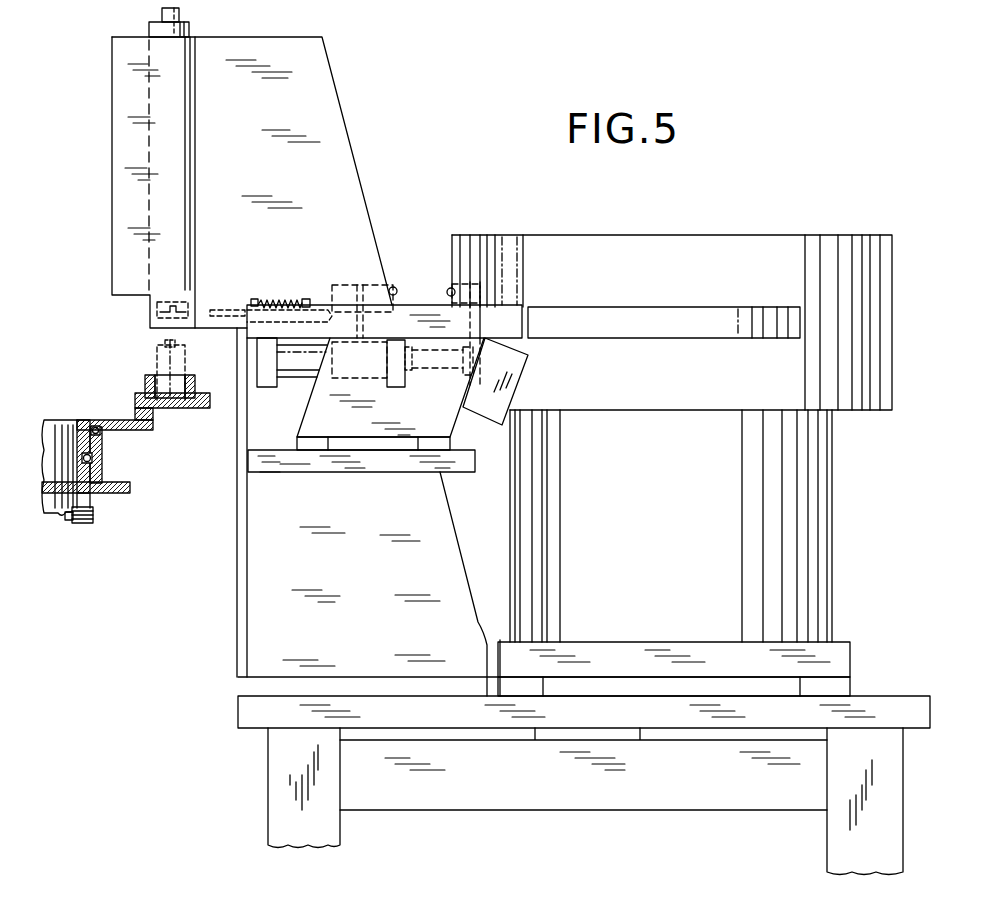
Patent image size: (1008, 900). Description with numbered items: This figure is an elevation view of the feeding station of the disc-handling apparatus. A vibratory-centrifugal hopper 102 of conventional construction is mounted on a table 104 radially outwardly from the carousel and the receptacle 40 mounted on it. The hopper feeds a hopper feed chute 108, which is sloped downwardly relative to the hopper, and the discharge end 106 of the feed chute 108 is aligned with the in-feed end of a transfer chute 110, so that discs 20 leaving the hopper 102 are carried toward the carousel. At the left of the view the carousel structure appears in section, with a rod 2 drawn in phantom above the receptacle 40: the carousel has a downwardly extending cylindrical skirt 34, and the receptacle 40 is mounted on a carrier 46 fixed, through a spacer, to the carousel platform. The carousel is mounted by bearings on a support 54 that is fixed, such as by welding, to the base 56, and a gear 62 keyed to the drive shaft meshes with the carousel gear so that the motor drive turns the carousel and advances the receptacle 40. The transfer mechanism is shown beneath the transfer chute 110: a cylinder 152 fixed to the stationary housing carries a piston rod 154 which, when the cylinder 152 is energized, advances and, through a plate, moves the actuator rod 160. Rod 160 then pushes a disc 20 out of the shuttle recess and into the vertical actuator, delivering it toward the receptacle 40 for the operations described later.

The rod 2 is at (150, 358).
The disc 20 is at (184, 298).
The cylindrical skirt 34 is at (53, 430).
The receptacle 40 is at (150, 382).
The carrier 46 is at (195, 410).
The support 54 is at (103, 462).
The base 56 is at (120, 494).
The gear 62 is at (82, 524).
The vibratory-centrifugal hopper 102 is at (745, 229).
The table 104 is at (885, 710).
The discharge end 106 is at (542, 307).
The hopper feed chute 108 is at (707, 326).
The transfer chute 110 is at (418, 300).
The cylinder 152 is at (292, 378).
The piston rod 154 is at (437, 370).
The actuator rod 160 is at (231, 307).